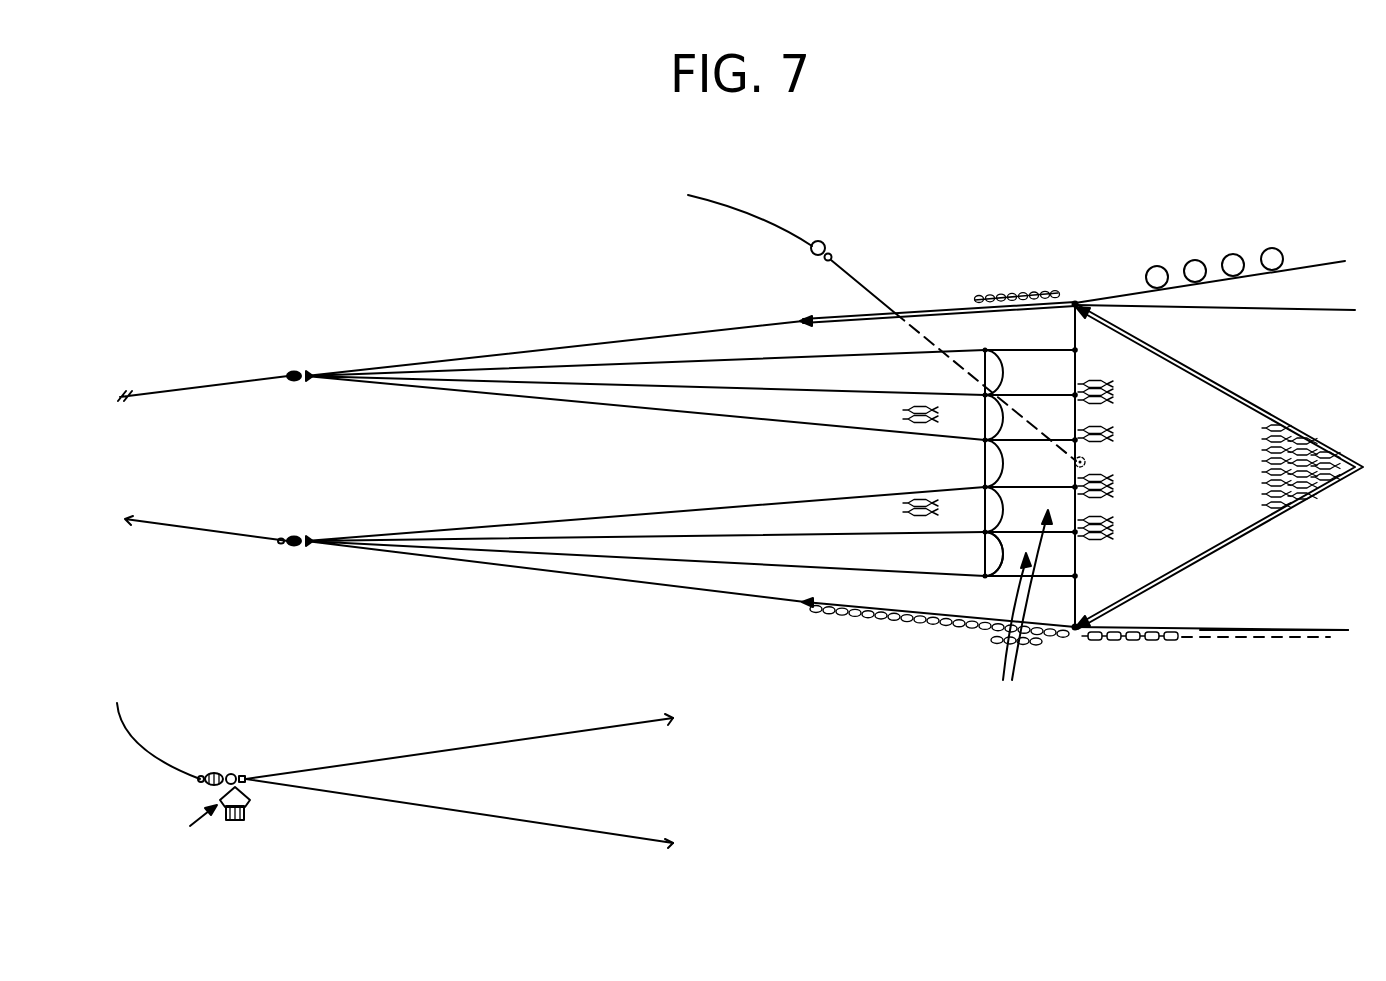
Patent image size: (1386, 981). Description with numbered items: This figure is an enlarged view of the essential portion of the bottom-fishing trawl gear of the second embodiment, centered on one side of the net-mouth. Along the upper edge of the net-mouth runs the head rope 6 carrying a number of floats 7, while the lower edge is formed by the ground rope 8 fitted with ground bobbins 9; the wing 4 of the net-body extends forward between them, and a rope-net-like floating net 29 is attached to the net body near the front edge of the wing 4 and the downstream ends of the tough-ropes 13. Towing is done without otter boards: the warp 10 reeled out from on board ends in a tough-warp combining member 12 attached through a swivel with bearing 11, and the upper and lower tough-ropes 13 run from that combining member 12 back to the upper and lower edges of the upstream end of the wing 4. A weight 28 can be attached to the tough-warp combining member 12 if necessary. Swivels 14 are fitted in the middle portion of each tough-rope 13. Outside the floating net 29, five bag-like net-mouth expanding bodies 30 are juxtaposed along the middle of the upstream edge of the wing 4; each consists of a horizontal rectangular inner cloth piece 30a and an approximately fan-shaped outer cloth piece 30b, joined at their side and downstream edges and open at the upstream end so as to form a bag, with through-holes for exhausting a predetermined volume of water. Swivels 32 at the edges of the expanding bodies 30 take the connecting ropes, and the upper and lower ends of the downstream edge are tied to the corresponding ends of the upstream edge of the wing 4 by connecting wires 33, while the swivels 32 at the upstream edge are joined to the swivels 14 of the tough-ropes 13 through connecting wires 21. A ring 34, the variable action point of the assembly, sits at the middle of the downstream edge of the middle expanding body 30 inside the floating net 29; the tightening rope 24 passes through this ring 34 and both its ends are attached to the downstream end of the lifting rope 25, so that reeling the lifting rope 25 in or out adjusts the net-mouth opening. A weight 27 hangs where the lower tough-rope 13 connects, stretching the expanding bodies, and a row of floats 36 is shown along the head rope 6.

The wings 4 is at (1308, 612).
The head rope 6 is at (1312, 262).
The floats 7 is at (1272, 248).
The ground rope 8 is at (1252, 640).
The ground bobbins 9 is at (1160, 646).
The warps 10 is at (140, 748).
The swivels with bearing 11 is at (209, 773).
The tough-warp combining member 12 is at (242, 772).
The tough-ropes 13 is at (505, 742).
The swivels 14 is at (295, 370).
The connecting wires 21 is at (580, 387).
The tightening rope 24 is at (860, 282).
The lifting rope 25 is at (780, 228).
The weight 27 is at (920, 615).
The weights 28 is at (228, 823).
The floating nets 29 is at (1198, 537).
The bag-like net-mouth expanding body 30 is at (1019, 612).
The inner cloth piece 30a is at (985, 556).
The outer cloth piece 30b is at (1012, 568).
The swivels 32 is at (985, 452).
The connecting wires 33 is at (1080, 300).
The ring 34 is at (1090, 462).
The headrope floats 36 is at (1036, 290).